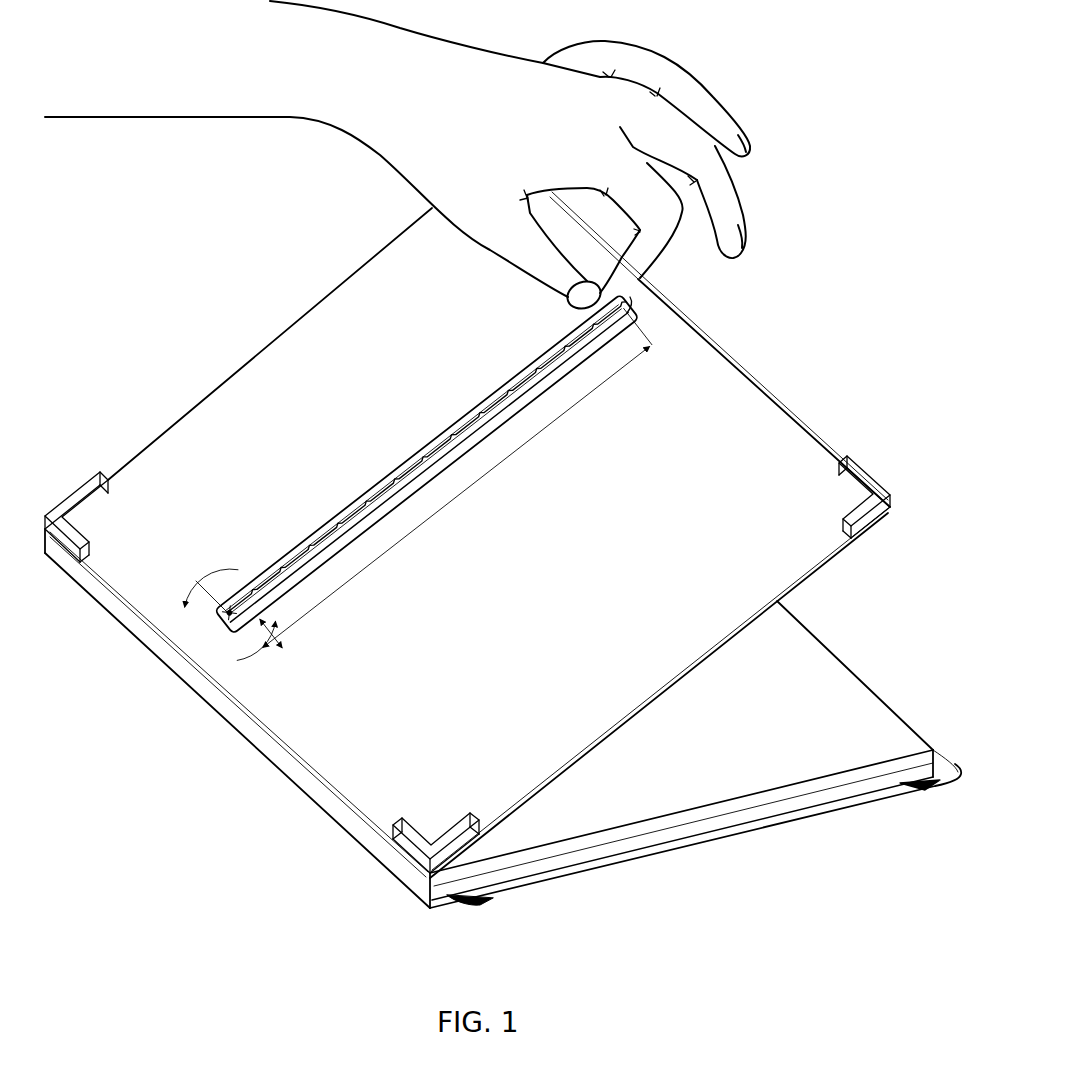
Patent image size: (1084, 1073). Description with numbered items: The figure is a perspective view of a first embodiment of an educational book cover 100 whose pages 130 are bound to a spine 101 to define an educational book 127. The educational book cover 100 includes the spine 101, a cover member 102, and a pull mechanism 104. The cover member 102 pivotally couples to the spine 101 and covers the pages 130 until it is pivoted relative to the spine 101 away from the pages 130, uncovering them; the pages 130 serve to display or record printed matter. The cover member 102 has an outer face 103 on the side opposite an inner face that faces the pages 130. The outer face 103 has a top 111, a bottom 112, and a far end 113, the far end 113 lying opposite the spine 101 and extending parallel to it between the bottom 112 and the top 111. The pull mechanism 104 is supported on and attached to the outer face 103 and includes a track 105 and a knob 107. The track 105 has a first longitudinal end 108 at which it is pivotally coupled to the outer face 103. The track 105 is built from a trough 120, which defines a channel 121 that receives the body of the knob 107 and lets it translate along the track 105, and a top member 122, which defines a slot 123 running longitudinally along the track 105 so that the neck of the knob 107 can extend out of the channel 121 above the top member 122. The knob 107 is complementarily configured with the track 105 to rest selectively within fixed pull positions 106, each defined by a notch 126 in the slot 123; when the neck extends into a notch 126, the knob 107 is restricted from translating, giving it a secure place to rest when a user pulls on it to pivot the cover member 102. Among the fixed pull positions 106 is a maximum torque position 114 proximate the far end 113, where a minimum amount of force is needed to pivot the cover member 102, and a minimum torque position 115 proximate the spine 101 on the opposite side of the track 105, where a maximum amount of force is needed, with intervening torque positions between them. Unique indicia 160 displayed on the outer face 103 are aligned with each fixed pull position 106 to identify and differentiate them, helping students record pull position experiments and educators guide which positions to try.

The educational book cover 100 is at (838, 292).
The spine 101 is at (68, 556).
The cover member 102 is at (470, 535).
The outer face 103 is at (820, 468).
The pull mechanism 104 is at (433, 471).
The track 105 is at (427, 463).
The fixed pull positions 106 is at (423, 460).
The knob 107 is at (609, 293).
The first longitudinal end 108 is at (229, 613).
The top 111 is at (266, 340).
The bottom 112 is at (812, 572).
The far end 113 is at (694, 330).
The maximum torque position 114 is at (608, 318).
The minimum torque position 115 is at (229, 618).
The trough 120 is at (447, 482).
The channel 121 is at (426, 456).
The top member 122 is at (426, 456).
The slot 123 is at (426, 456).
The notch 126 is at (426, 456).
The educational book 127 is at (862, 346).
The pages 130 is at (877, 714).
The indicia 160 is at (448, 482).